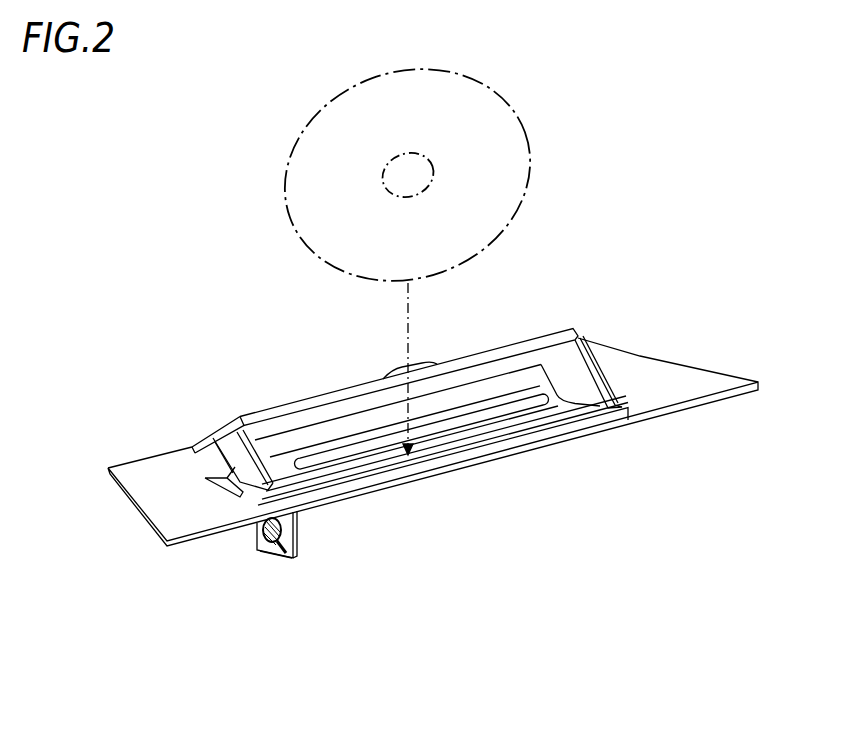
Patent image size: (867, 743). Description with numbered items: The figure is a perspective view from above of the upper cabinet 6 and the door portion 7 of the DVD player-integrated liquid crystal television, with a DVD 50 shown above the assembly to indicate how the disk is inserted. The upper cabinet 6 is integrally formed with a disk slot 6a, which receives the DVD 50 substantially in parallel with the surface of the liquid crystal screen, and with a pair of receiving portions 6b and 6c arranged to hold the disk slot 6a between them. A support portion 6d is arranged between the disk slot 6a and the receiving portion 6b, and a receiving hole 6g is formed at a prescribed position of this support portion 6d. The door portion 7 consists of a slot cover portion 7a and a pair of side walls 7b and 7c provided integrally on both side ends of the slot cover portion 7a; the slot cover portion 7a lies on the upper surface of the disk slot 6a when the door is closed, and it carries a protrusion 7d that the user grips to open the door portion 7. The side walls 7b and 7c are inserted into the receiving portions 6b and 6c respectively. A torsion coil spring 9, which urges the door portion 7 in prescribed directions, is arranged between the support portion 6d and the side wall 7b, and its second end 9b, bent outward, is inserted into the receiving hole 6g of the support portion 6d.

The DVD 50 is at (530, 158).
The upper cabinet 6 is at (597, 356).
The disk slot 6a is at (377, 447).
The receiving portion 6b is at (217, 480).
The receiving portion 6c is at (603, 392).
The support portion 6d is at (285, 536).
The receiving hole 6g is at (291, 563).
The door portion 7 is at (509, 352).
The slot cover portion 7a is at (373, 402).
The side wall 7b is at (249, 490).
The side wall 7c is at (578, 396).
The protrusion 7d is at (424, 368).
The torsion coil spring 9 is at (265, 548).
The second end 9b is at (284, 554).